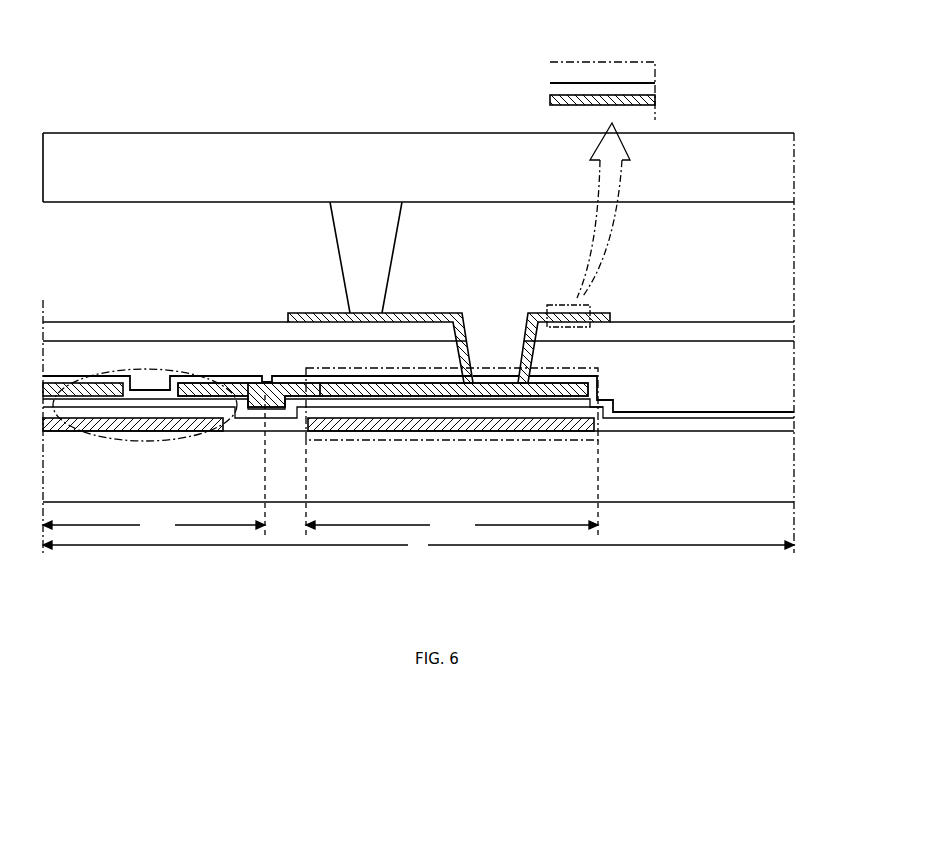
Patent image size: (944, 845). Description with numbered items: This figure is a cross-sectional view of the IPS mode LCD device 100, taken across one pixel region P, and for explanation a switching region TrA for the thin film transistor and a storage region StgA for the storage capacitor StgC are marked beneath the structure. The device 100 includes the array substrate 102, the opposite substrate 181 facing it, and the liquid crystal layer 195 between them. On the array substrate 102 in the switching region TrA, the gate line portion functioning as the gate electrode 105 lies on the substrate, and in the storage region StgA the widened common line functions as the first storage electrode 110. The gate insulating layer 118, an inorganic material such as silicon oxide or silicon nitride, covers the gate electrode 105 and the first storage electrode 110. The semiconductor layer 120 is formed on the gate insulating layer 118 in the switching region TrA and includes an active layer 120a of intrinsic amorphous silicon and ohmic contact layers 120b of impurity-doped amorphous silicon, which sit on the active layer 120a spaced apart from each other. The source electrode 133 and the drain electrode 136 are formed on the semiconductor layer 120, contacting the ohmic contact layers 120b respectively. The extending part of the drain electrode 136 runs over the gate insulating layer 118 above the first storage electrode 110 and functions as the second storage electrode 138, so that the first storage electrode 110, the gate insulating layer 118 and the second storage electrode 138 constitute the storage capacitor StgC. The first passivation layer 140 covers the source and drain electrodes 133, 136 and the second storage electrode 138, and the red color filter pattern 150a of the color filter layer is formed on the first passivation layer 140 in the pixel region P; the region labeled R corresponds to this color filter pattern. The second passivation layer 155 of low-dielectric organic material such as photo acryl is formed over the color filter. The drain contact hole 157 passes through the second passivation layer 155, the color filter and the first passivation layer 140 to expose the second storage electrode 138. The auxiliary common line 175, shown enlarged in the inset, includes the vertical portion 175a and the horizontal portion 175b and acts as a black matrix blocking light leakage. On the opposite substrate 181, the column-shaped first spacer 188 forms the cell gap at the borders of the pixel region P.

The IPS mode LCD device 100 is at (721, 108).
The array substrate 102 is at (749, 497).
The gate electrode 105 is at (124, 431).
The first storage electrode 110 is at (535, 433).
The gate insulating layer 118 is at (653, 421).
The semiconductor layer 120 is at (213, 462).
The active layer 120a is at (190, 402).
The ohmic contact layers 120b is at (205, 398).
The source electrode 133 is at (97, 388).
The drain electrode 136 is at (200, 387).
The second storage electrode 138 is at (570, 383).
The first passivation layer 140 is at (674, 411).
The red color filter pattern 150a is at (416, 316).
The second passivation layer 155 is at (652, 333).
The drain contact hole 157 is at (494, 335).
The auxiliary common line 175 is at (558, 308).
The vertical portion 175a is at (617, 93).
The horizontal portion 175b is at (590, 88).
The opposite substrate 181 is at (762, 178).
The first spacer 188 is at (378, 228).
The liquid crystal layer 195 is at (762, 258).
The reflection region R is at (410, 330).
The storage capacitor StgC is at (439, 480).
The storage region StgA is at (452, 525).
The switching region TrA is at (154, 525).
The pixel region P is at (418, 545).